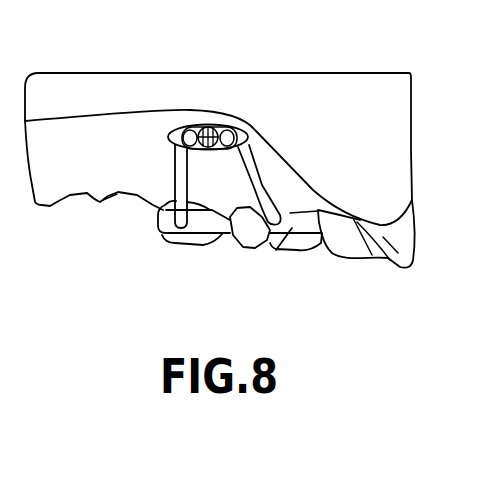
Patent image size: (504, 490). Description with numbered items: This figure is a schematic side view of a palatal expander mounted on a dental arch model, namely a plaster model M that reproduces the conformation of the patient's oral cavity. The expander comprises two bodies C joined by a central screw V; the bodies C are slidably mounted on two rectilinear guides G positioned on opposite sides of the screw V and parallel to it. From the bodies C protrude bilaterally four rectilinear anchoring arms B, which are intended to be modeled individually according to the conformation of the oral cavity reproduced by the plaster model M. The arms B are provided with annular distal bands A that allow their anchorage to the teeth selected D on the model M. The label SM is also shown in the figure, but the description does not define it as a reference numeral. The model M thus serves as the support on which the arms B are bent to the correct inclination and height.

The plaster model M is at (392, 142).
The teeth selected D is at (202, 245).
The annular distal bands A is at (170, 220).
The rectilinear anchoring arms B is at (174, 177).
The bodies C is at (170, 137).
The support member SM is at (220, 91).
The central screw V is at (207, 126).
The rectilinear guides G is at (182, 128).